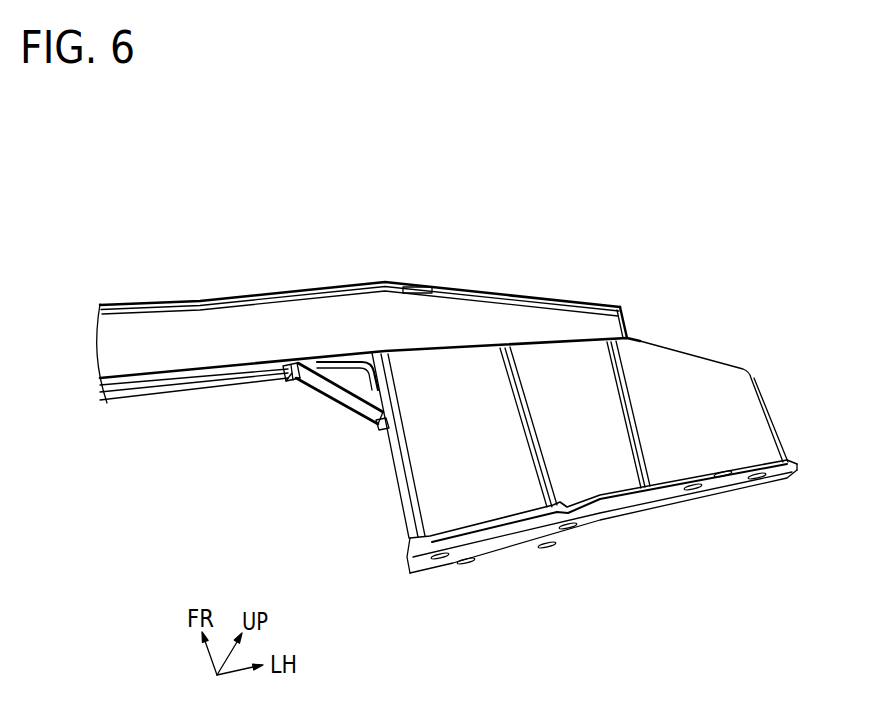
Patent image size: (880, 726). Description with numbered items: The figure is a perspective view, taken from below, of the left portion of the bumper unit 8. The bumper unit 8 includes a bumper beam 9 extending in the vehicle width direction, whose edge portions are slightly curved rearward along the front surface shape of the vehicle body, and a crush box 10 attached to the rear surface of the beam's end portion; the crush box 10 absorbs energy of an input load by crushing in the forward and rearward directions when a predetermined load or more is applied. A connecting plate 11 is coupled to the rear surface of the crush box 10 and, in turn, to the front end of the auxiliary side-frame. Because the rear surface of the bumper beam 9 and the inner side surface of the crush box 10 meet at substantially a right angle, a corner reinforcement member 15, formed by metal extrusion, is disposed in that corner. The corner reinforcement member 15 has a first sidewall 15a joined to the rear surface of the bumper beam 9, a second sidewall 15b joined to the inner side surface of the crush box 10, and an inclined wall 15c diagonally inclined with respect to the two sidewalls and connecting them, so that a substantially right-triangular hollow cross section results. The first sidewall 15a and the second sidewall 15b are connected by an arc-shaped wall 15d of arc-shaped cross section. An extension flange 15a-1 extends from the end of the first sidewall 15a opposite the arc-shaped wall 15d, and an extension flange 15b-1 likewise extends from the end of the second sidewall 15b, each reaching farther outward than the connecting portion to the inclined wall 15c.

The bumper unit 8 is at (550, 257).
The bumper beam 9 is at (337, 281).
The crush box 10 is at (680, 350).
The connecting plate 11 is at (677, 502).
The corner reinforcement member 15 is at (333, 408).
The first sidewall 15a is at (323, 353).
The extension flange 15a-1 is at (292, 373).
The second sidewall 15b is at (380, 387).
The extension flange 15b-1 is at (377, 433).
The inclined wall 15c is at (298, 378).
The arc-shaped wall 15d is at (373, 353).